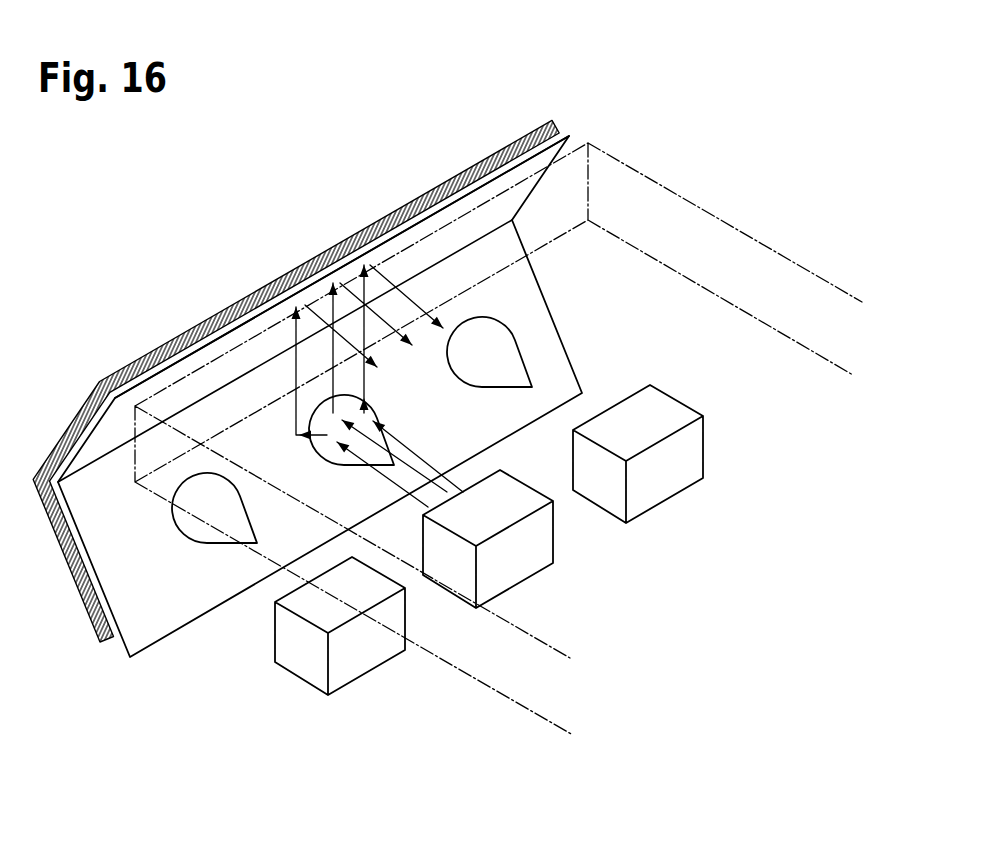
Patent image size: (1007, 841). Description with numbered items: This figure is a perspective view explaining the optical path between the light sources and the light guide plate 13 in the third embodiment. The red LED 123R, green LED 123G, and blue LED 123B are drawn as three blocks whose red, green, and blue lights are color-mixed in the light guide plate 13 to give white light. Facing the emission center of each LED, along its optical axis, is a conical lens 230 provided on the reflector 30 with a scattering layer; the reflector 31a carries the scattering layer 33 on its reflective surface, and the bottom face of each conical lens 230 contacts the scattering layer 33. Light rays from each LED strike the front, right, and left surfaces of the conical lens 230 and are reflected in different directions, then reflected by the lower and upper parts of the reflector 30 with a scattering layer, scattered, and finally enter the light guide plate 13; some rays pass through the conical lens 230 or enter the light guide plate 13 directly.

The light guide plate 13 is at (762, 275).
The reflector with a scattering layer 30 is at (191, 226).
The reflector 31a is at (148, 354).
The scattering layer 33 is at (222, 320).
The conical lens 230 is at (497, 363).
The red LED 123R is at (353, 668).
The green LED 123G is at (537, 563).
The blue LED 123B is at (678, 478).